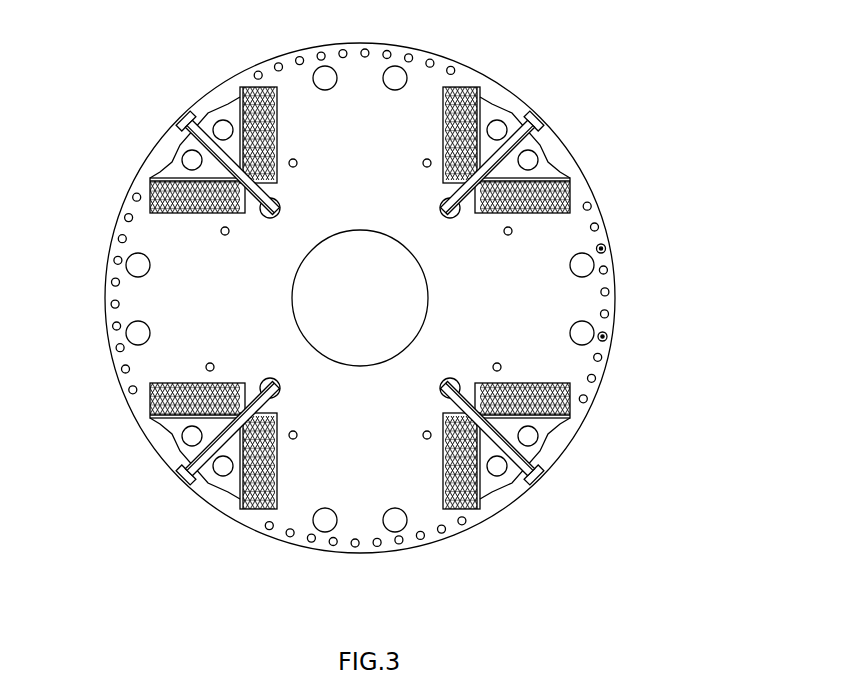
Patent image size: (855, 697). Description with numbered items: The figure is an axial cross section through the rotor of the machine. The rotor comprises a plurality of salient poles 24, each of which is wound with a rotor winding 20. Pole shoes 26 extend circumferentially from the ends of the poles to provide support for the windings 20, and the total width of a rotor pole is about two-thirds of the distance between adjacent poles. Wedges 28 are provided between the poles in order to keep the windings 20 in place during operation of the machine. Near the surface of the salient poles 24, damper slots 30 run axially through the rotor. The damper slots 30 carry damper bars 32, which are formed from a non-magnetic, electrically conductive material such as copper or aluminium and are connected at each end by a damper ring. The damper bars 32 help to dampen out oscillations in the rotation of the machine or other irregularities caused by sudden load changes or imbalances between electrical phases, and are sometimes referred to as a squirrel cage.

The rotor winding 20 is at (475, 85).
The salient pole 24 is at (413, 78).
The pole shoe 26 is at (582, 193).
The wedge 28 is at (540, 148).
The damper slot 30 is at (605, 247).
The damper bar 32 is at (605, 251).